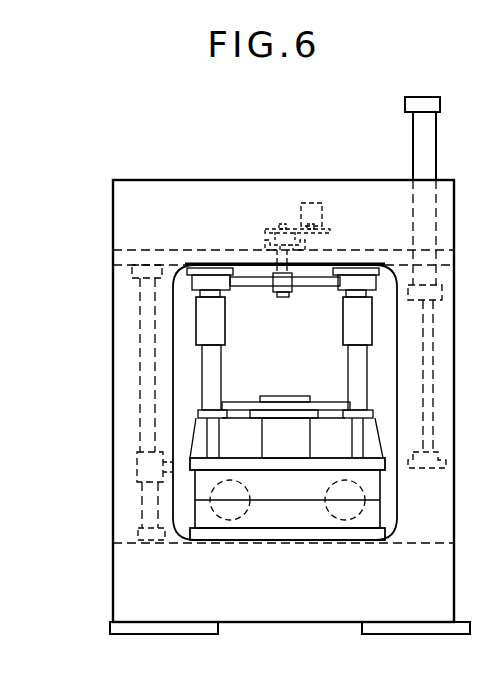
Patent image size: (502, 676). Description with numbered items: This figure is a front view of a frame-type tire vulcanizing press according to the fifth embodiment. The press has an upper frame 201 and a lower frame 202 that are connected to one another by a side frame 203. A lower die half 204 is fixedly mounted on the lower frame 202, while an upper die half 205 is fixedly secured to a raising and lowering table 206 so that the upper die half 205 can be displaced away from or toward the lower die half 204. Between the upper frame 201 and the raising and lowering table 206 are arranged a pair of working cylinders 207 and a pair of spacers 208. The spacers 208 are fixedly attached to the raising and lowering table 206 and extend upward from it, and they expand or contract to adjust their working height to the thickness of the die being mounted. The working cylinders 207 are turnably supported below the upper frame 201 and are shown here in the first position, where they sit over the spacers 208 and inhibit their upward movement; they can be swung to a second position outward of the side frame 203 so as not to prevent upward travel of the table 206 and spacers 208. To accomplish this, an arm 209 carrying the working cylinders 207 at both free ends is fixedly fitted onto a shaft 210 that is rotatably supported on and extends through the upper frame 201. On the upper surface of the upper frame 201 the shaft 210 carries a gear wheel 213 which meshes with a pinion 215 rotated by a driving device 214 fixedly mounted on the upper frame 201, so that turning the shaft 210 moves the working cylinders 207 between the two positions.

The upper frame 201 is at (184, 190).
The lower frame 202 is at (282, 623).
The side frame 203 is at (114, 366).
The lower die half 204 is at (382, 519).
The upper die half 205 is at (382, 488).
The raising and lowering table 206 is at (378, 436).
The working cylinders 207 is at (231, 290).
The spacers 208 is at (222, 371).
The arm 209 is at (318, 286).
The shaft 210 is at (283, 295).
The gear wheel 213 is at (271, 227).
The driving device 214 is at (323, 214).
The pinion 215 is at (331, 233).